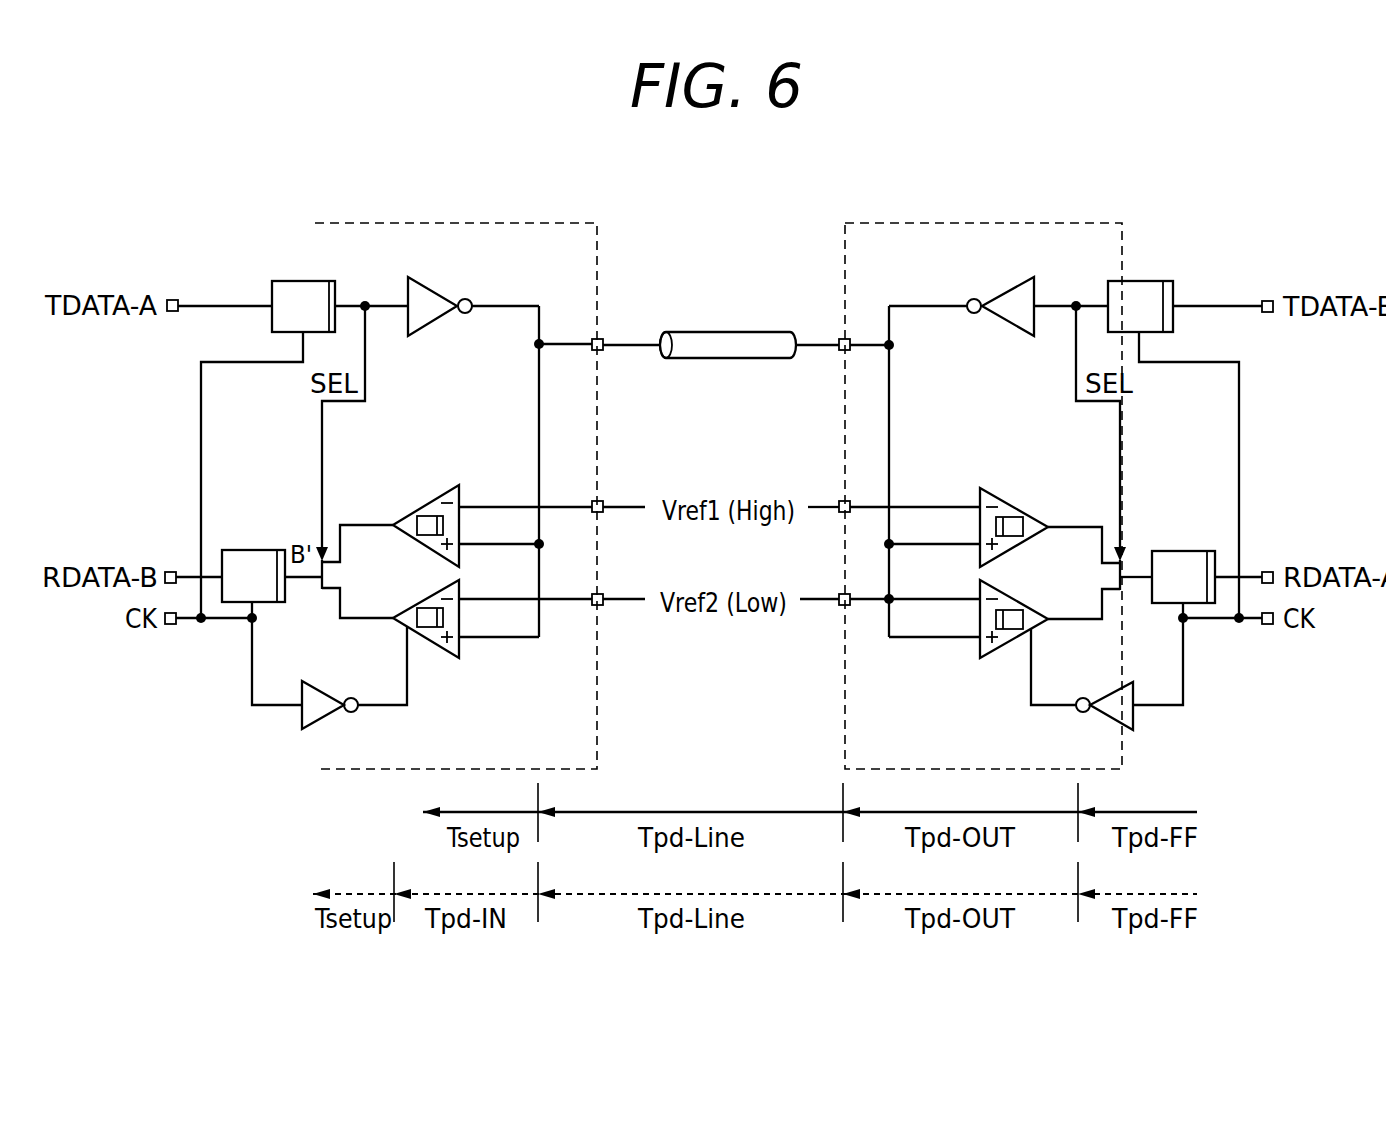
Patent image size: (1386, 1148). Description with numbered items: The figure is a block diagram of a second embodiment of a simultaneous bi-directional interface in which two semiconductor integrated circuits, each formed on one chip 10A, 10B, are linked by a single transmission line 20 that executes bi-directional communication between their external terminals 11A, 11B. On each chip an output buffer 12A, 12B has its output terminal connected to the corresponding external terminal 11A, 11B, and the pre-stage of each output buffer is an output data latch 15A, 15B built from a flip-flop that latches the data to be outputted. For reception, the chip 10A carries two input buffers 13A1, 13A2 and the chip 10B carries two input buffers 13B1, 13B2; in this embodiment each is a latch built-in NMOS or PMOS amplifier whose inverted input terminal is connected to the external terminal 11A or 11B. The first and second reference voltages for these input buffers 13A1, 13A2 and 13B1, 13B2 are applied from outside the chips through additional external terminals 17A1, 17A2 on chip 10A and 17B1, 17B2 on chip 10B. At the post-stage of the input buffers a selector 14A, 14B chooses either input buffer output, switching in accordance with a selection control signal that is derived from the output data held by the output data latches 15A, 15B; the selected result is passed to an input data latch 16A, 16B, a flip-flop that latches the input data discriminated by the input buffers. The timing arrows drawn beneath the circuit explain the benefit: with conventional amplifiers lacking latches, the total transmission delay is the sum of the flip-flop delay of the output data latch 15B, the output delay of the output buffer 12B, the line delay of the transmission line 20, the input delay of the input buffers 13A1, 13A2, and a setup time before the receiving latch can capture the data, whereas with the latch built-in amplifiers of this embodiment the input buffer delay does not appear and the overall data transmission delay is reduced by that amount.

The semiconductor integrated circuit chip 10A is at (510, 222).
The semiconductor integrated circuit chip 10B is at (935, 222).
The external terminal 11A is at (603, 352).
The external terminal 11B is at (840, 352).
The output buffer 12A is at (432, 291).
The output buffer 12B is at (1008, 291).
The input buffer 13A1 is at (420, 508).
The input buffer 13A2 is at (437, 645).
The input buffer 13B1 is at (1013, 508).
The input buffer 13B2 is at (1007, 645).
The selector 14A is at (320, 594).
The selector 14B is at (1122, 594).
The output data latch 15A is at (290, 281).
The output data latch 15B is at (1152, 282).
The input data latch 16A is at (255, 550).
The input data latch 16B is at (1185, 551).
The external terminal 17A1 is at (603, 513).
The external terminal 17A2 is at (603, 605).
The external terminal 17B1 is at (840, 513).
The external terminal 17B2 is at (840, 605).
The transmission line 20 is at (715, 360).